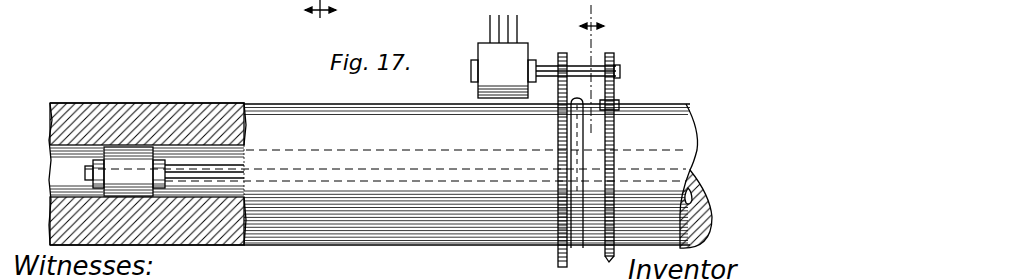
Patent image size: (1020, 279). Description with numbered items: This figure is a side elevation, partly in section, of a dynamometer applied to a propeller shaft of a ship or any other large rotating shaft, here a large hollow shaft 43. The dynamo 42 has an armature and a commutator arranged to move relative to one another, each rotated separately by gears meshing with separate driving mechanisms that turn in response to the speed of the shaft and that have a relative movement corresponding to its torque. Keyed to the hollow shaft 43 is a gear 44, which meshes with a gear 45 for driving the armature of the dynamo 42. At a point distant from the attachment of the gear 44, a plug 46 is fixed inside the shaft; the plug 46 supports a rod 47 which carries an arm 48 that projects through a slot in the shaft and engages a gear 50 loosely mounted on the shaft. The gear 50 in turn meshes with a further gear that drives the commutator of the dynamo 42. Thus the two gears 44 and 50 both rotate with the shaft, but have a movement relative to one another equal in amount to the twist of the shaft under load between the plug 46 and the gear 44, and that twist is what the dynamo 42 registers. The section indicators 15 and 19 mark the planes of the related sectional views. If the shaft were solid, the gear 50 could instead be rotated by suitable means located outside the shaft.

The section line 15 is at (320, 17).
The section line 19 is at (590, 139).
The dynamo 42 is at (492, 57).
The hollow shaft 43 is at (147, 112).
The gear 44 is at (613, 104).
The gear 45 is at (616, 60).
The plug 46 is at (118, 162).
The rod 47 is at (415, 173).
The arm 48 is at (578, 98).
The gear 50 is at (557, 262).